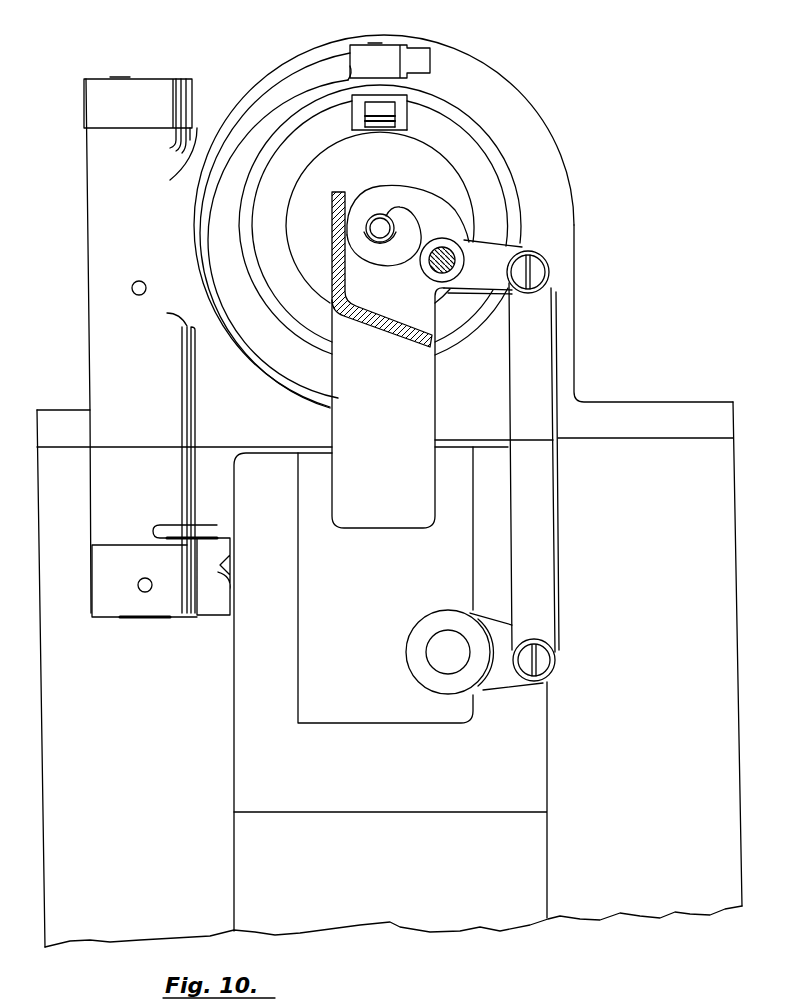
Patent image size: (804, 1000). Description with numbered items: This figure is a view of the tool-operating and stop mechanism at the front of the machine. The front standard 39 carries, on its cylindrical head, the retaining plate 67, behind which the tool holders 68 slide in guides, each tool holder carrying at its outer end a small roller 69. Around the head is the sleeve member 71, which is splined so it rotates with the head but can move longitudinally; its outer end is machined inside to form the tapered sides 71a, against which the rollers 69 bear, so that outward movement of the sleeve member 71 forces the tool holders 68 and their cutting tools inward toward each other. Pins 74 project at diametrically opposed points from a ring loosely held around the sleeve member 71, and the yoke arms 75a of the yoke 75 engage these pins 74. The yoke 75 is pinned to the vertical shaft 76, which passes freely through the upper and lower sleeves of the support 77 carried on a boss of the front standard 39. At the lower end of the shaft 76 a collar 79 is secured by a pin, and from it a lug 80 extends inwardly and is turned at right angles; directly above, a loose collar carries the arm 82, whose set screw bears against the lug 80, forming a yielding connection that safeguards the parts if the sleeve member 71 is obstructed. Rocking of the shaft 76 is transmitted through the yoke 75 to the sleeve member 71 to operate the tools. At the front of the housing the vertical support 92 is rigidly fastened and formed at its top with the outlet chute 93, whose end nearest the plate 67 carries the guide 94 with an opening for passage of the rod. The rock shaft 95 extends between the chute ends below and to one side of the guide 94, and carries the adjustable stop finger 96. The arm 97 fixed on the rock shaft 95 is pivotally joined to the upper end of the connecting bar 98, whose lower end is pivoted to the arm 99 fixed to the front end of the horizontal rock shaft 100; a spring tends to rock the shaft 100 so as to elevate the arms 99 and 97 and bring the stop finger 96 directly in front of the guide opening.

The standard 39 is at (509, 107).
The retaining plate 67 is at (298, 230).
The tool holder 68 is at (398, 128).
The roller 69 is at (385, 107).
The sleeve member 71 is at (512, 183).
The tapered sides 71a is at (457, 150).
The pin 74 is at (380, 44).
The yoke 75 is at (105, 210).
The yoke arm 75a is at (258, 84).
The vertical shaft 76 is at (130, 78).
The support 77 is at (190, 94).
The collar 79 is at (103, 585).
The lug 80 is at (217, 600).
The arm 82 is at (204, 528).
The vertical support 92 is at (420, 502).
The outlet chute 93 is at (335, 240).
The guide 94 is at (378, 204).
The rock shaft 95 is at (450, 255).
The stop finger 96 is at (430, 192).
The arm 97 is at (478, 285).
The connecting bar 98 is at (545, 505).
The arm 99 is at (512, 682).
The horizontal rock shaft 100 is at (443, 655).